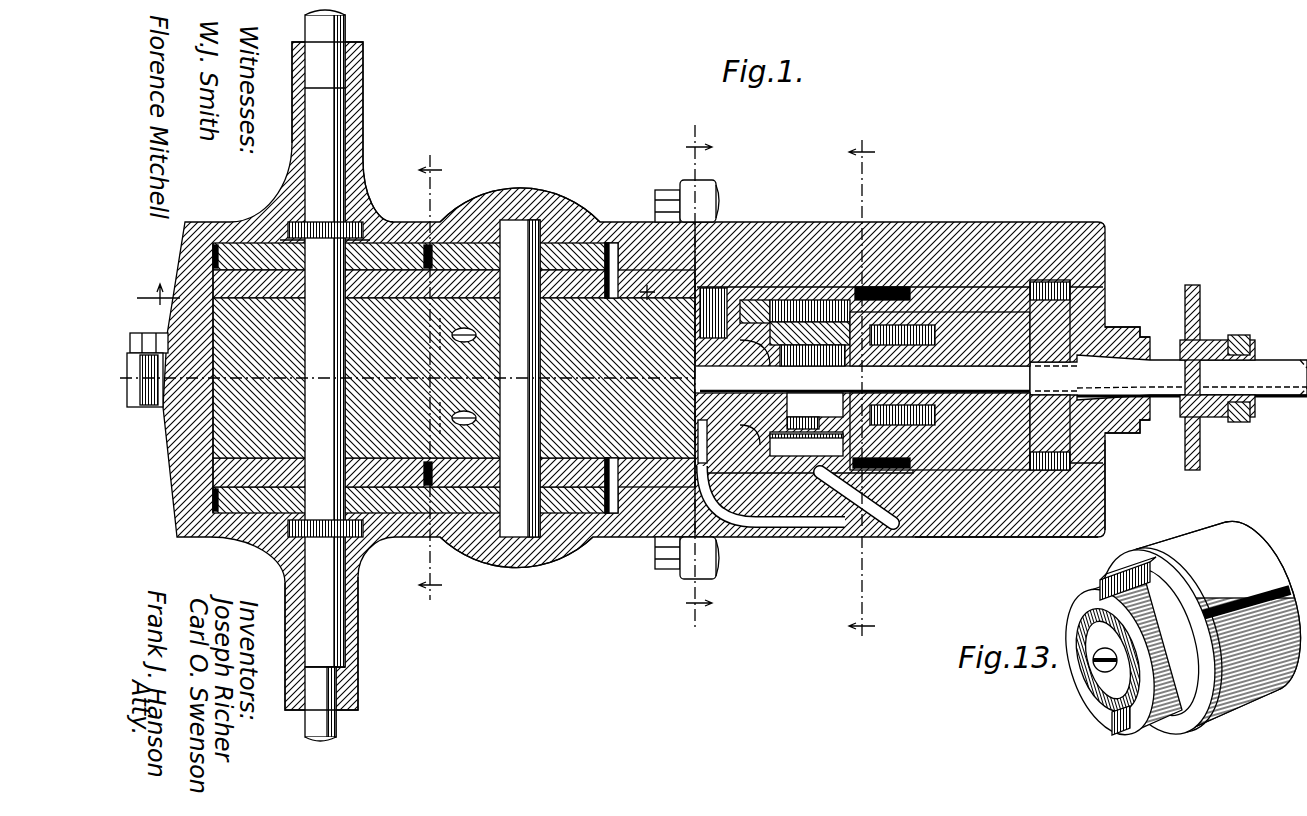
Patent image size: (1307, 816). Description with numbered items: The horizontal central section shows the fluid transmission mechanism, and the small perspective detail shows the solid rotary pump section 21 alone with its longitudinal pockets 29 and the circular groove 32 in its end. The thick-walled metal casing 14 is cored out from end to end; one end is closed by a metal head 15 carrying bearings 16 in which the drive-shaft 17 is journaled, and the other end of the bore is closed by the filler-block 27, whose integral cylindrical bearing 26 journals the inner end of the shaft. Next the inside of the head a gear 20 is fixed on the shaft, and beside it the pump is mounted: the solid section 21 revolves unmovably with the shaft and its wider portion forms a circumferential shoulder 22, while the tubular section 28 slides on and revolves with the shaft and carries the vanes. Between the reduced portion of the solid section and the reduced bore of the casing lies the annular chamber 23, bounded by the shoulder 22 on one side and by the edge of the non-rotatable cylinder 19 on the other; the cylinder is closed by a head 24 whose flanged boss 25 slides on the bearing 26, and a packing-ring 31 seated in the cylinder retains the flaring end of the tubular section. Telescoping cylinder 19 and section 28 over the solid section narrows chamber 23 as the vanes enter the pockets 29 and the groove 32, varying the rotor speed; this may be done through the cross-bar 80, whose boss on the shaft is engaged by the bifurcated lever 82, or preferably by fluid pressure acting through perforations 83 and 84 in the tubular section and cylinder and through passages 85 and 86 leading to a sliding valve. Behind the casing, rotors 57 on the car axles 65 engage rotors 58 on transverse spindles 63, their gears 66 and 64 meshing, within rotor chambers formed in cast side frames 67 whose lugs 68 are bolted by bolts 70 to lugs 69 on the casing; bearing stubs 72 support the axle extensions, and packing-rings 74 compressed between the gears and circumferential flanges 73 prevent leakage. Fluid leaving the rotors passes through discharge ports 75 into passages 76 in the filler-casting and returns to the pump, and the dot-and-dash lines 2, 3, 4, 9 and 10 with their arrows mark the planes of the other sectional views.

In FIG. 1, the section line / axis 2 is at (120, 390).
In FIG. 1, the section line 3- 3 is at (699, 374).
In FIG. 1, the section line 4- 4 is at (862, 390).
In FIG. 1, the section line 9- 9 is at (403, 295).
In FIG. 1, the section line 10- 10 is at (432, 374).
In FIG. 1, the casing 14 is at (968, 537).
In FIG. 1, the head 15 is at (1105, 522).
In FIG. 1, the bearings 16 is at (1150, 425).
In FIG. 1, the drive-shaft 17 is at (1168, 377).
In FIG. 1, the cylinder 19 is at (815, 300).
In FIG. 1, the gear 20 is at (1075, 318).
In FIG. 1, the solid pump section 21 is at (1010, 470).
In FIG. 13, the solid pump section 21 is at (1193, 634).
In FIG. 1, the circumferential shoulder 22 is at (905, 470).
In FIG. 1, the annular chamber 23 is at (882, 292).
In FIG. 1, the head 24 is at (745, 300).
In FIG. 1, the flanged boss 25 is at (712, 290).
In FIG. 1, the cylindrical bearing 26 is at (755, 366).
In FIG. 1, the filler-block 27 is at (454, 378).
In FIG. 1, the tubular pump section 28 is at (815, 405).
In FIG. 13, the pockets 29 is at (1104, 580).
In FIG. 1, the packing-ring 31 is at (790, 300).
In FIG. 1, the circular groove 32 is at (862, 379).
In FIG. 13, the circular groove 32 is at (1096, 702).
In FIG. 1, the rotors 57 is at (195, 275).
In FIG. 1, the rotors 58 is at (468, 250).
In FIG. 1, the transverse spindles 63 is at (540, 385).
In FIG. 1, the gears 64 is at (588, 243).
In FIG. 1, the axles 65 is at (325, 375).
In FIG. 1, the gears 66 is at (400, 247).
In FIG. 1, the side frames 67 is at (522, 192).
In FIG. 1, the lugs 68 is at (692, 188).
In FIG. 1, the lugs 69 is at (716, 185).
In FIG. 1, the bolts 70 is at (662, 204).
In FIG. 1, the bearing stubs 72 is at (363, 104).
In FIG. 1, the circumferential flanges 73 is at (366, 230).
In FIG. 1, the packing-rings 74 is at (393, 218).
In FIG. 1, the discharge ports 75 is at (440, 340).
In FIG. 1, the passages 76 is at (464, 343).
In FIG. 1, the cross-bar 80 is at (1200, 448).
In FIG. 1, the lever 82 is at (1238, 336).
In FIG. 1, the perforations 83 is at (762, 470).
In FIG. 1, the perforations 84 is at (825, 456).
In FIG. 1, the passage 85 is at (790, 528).
In FIG. 1, the passage 86 is at (870, 510).